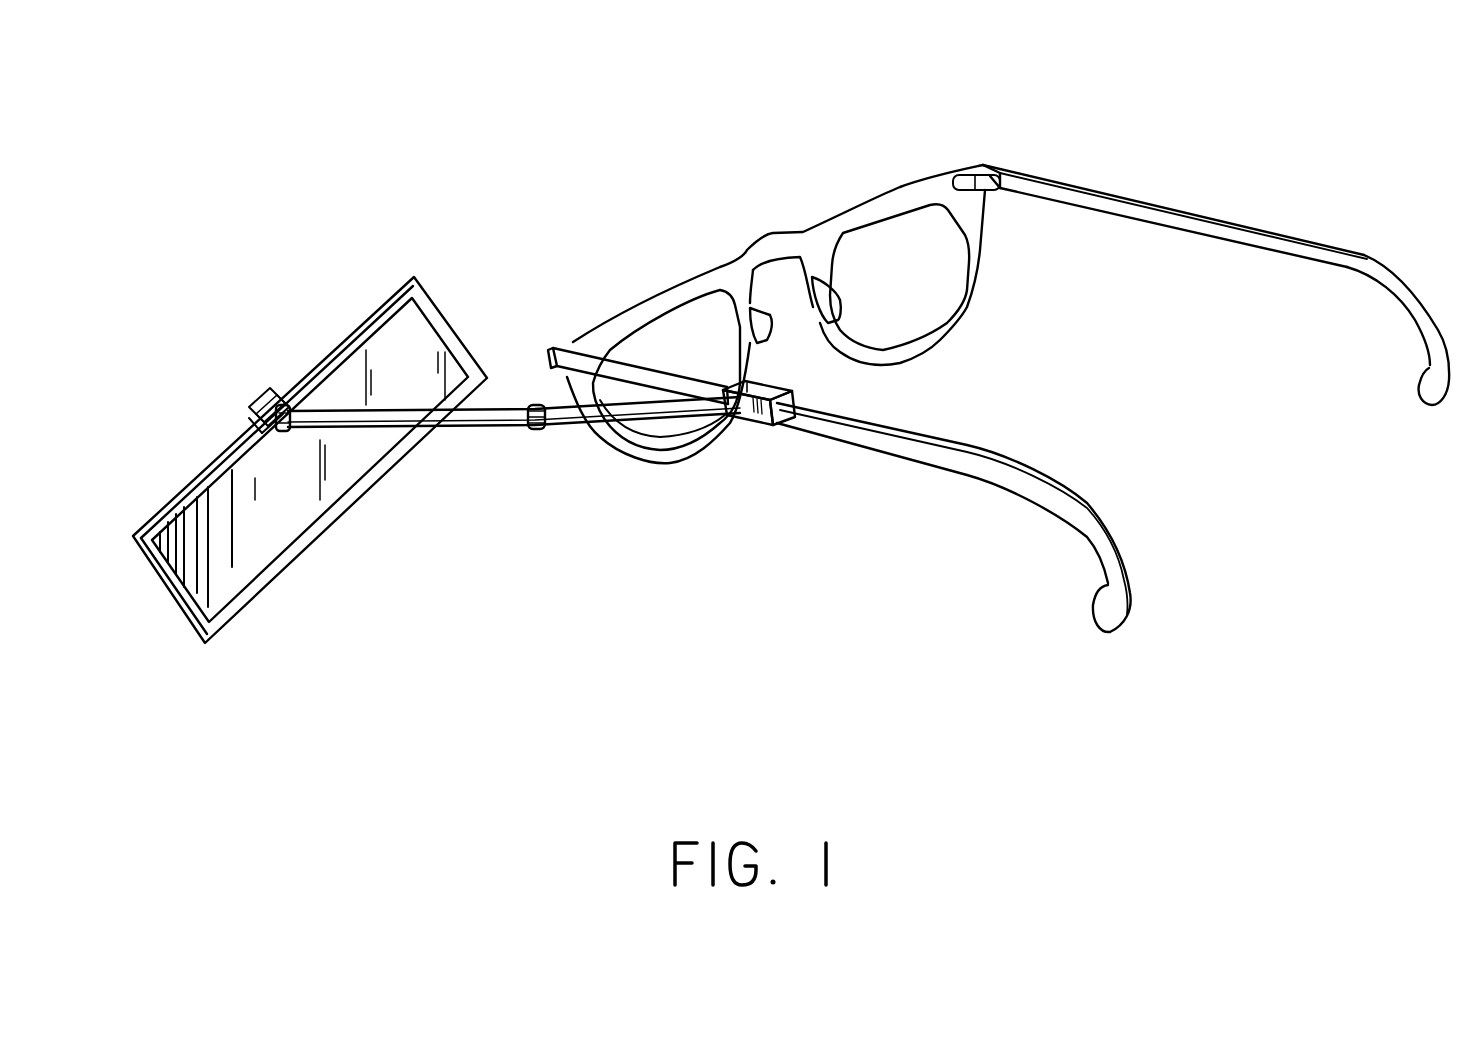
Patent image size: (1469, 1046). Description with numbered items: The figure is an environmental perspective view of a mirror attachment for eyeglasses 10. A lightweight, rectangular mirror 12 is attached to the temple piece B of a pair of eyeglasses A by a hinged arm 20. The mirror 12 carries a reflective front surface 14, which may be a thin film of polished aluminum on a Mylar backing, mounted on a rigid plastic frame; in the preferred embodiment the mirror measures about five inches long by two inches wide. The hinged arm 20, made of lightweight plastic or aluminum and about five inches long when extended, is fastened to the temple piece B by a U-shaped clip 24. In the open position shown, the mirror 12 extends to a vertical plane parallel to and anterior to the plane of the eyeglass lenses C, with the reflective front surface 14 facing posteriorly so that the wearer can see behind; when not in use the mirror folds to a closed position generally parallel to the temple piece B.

The mirror attachment for eyeglasses 10 is at (588, 473).
The mirror 12 is at (337, 340).
The reflective front surface 14 is at (270, 478).
The hinged arm 20 is at (490, 432).
The U-shaped clip 24 is at (742, 428).
The eyeglasses A is at (967, 447).
The temple piece B is at (843, 208).
The eyeglass lenses C is at (965, 274).